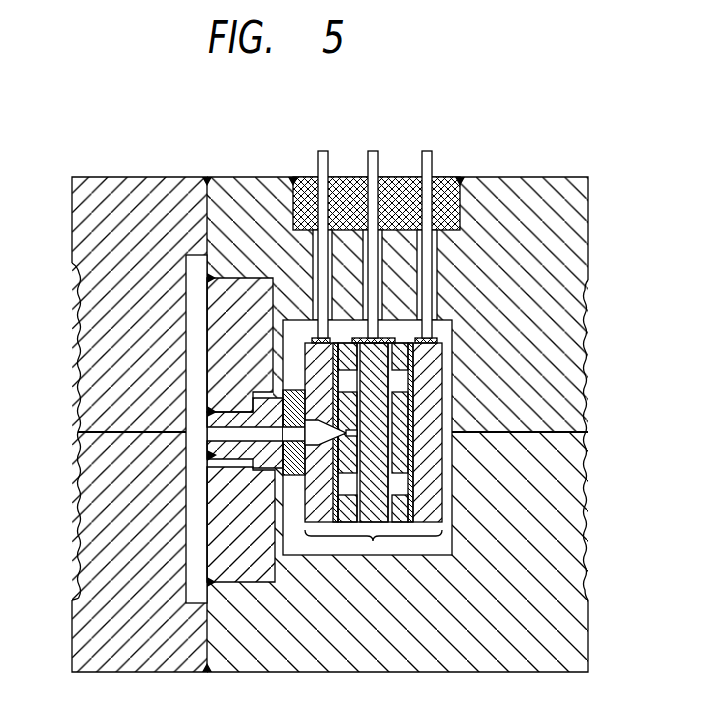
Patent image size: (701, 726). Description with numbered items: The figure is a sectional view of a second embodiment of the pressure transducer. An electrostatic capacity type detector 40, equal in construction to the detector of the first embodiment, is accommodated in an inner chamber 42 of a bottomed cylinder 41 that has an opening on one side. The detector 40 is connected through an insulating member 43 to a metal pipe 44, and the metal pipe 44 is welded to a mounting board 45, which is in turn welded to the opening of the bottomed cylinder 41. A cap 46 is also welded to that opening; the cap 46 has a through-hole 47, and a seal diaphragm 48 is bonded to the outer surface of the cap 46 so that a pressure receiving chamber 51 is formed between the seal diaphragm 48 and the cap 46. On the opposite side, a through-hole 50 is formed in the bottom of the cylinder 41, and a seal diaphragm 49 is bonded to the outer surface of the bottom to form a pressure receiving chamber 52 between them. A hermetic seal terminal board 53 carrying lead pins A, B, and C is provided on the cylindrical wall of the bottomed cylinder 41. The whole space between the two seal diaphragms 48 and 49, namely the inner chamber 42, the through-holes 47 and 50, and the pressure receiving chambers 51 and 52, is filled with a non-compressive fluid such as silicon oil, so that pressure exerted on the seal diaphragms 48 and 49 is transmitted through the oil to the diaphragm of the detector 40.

The electrostatic capacity type detector 40 is at (373, 542).
The bottomed cylinder 41 is at (548, 190).
The inner chamber 42 is at (427, 545).
The insulating member 43 is at (297, 390).
The metal pipe 44 is at (283, 475).
The mounting board 45 is at (254, 572).
The cap 46 is at (126, 186).
The through-hole 47 is at (97, 420).
The seal diaphragm 48 is at (79, 462).
The seal diaphragm 49 is at (590, 462).
The through-hole 50 is at (566, 420).
The pressure receiving chamber 51 is at (79, 525).
The pressure receiving chamber 52 is at (590, 524).
The hermetic seal terminal board 53 is at (450, 177).
The lead pin A is at (322, 228).
The lead pin B is at (426, 228).
The lead pin C is at (374, 228).